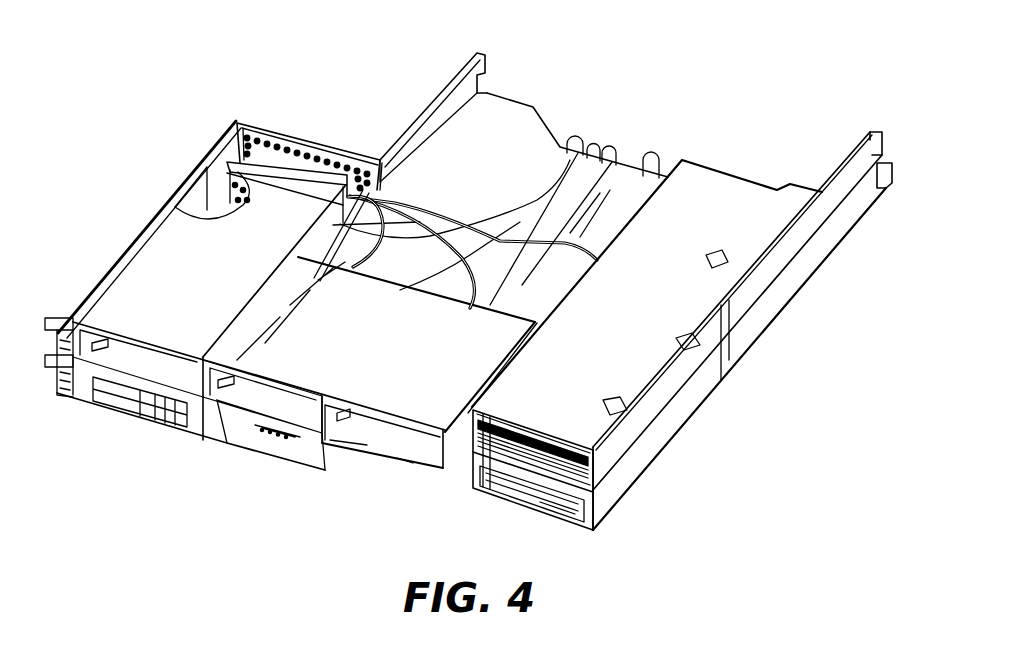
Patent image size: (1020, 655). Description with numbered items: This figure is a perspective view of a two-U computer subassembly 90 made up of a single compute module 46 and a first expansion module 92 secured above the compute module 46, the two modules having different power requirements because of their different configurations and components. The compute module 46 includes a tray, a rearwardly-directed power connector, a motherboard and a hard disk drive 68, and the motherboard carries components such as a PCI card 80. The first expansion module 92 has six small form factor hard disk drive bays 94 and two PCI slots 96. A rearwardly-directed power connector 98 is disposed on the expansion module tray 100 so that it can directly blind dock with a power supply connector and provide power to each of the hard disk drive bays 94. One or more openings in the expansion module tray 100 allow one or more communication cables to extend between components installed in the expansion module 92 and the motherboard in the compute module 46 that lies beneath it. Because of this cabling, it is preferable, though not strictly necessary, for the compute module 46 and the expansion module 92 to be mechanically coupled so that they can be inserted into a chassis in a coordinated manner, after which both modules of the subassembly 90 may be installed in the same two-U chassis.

The 2U computer subassembly 90 is at (336, 58).
The first expansion module 92 is at (404, 116).
The rearwardly-directed power connector 98 is at (270, 157).
The hard disk drive 68 is at (232, 266).
The expansion module tray 100 is at (515, 194).
The PCI card 80 is at (622, 344).
The small form factor hard disk drive bays 94 is at (113, 355).
The PCI slots 96 is at (512, 436).
The compute module 46 is at (634, 467).